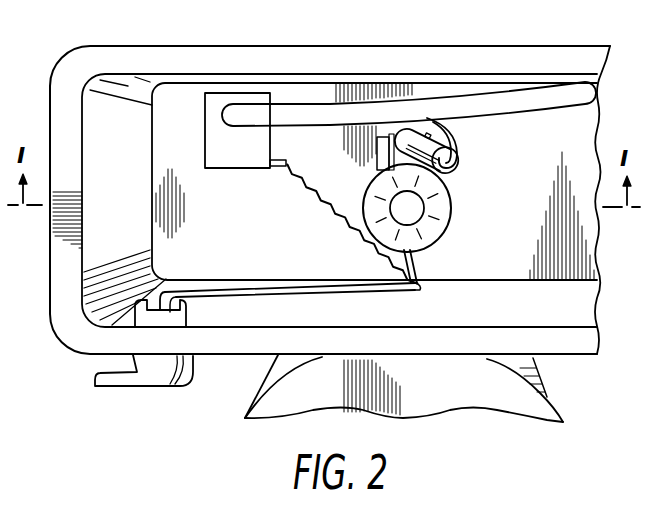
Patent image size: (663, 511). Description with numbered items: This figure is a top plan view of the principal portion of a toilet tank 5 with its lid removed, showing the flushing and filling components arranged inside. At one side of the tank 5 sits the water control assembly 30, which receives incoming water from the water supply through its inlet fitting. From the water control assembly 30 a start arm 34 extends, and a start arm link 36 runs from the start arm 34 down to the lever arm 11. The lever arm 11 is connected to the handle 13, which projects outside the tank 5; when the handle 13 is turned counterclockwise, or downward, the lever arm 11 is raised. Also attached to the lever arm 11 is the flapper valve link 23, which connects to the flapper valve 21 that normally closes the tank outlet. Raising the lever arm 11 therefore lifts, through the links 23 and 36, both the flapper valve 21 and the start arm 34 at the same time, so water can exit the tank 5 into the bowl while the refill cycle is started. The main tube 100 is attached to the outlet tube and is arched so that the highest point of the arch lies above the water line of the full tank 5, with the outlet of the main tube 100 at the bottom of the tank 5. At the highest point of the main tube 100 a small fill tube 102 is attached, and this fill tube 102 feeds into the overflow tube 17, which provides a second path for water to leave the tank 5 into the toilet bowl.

The tank 5 is at (598, 343).
The lever arm 11 is at (312, 292).
The handle 13 is at (168, 387).
The overflow tube 17 is at (455, 163).
The flapper valve 21 is at (452, 206).
The flapper valve link 23 is at (420, 262).
The water control assembly 30 is at (205, 148).
The start arm 34 is at (280, 168).
The start arm link 36 is at (318, 218).
The main tube 100 is at (308, 115).
The fill tube 102 is at (449, 141).